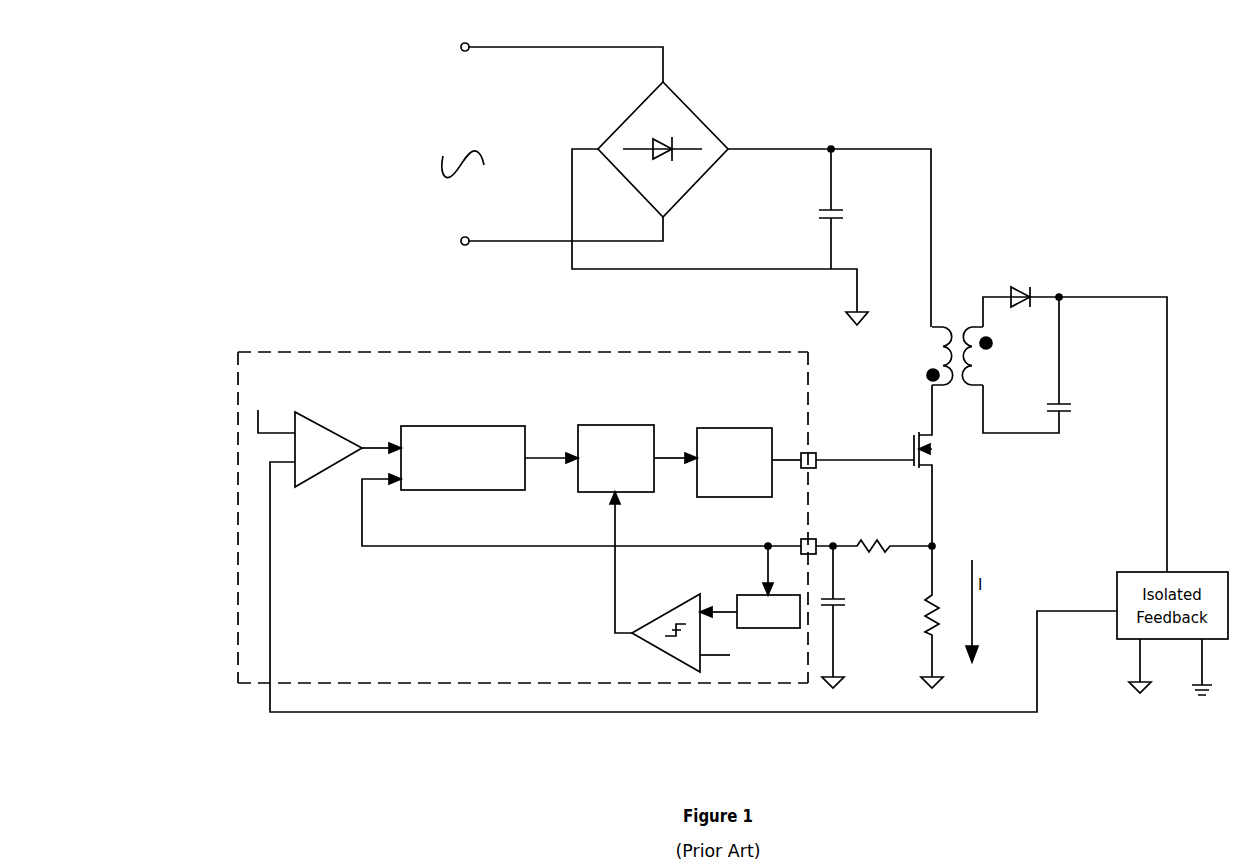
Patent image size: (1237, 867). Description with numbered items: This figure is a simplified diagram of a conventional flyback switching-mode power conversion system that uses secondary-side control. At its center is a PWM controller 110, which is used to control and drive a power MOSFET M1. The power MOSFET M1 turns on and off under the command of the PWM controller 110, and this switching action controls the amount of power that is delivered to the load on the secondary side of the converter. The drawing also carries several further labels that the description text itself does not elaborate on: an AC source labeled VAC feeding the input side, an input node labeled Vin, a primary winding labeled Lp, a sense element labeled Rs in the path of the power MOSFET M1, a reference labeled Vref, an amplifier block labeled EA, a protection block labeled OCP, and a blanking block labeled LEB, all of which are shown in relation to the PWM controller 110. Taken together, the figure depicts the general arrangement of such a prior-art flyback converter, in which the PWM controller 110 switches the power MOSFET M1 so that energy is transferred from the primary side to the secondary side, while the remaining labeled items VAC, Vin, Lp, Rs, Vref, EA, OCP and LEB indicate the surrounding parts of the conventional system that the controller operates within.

The PWM controller 110 is at (493, 549).
The power MOSFET M1 is at (938, 465).
The current sense resistor Rs is at (942, 617).
The primary winding of transformer Lp is at (927, 356).
The rectified input voltage node Vin is at (829, 223).
The AC input source VAC is at (463, 144).
The reference voltage input Vref is at (276, 412).
The error amplifier EA is at (328, 449).
The over-current protection comparator OCP is at (666, 628).
The leading edge blanking block LEB is at (768, 611).